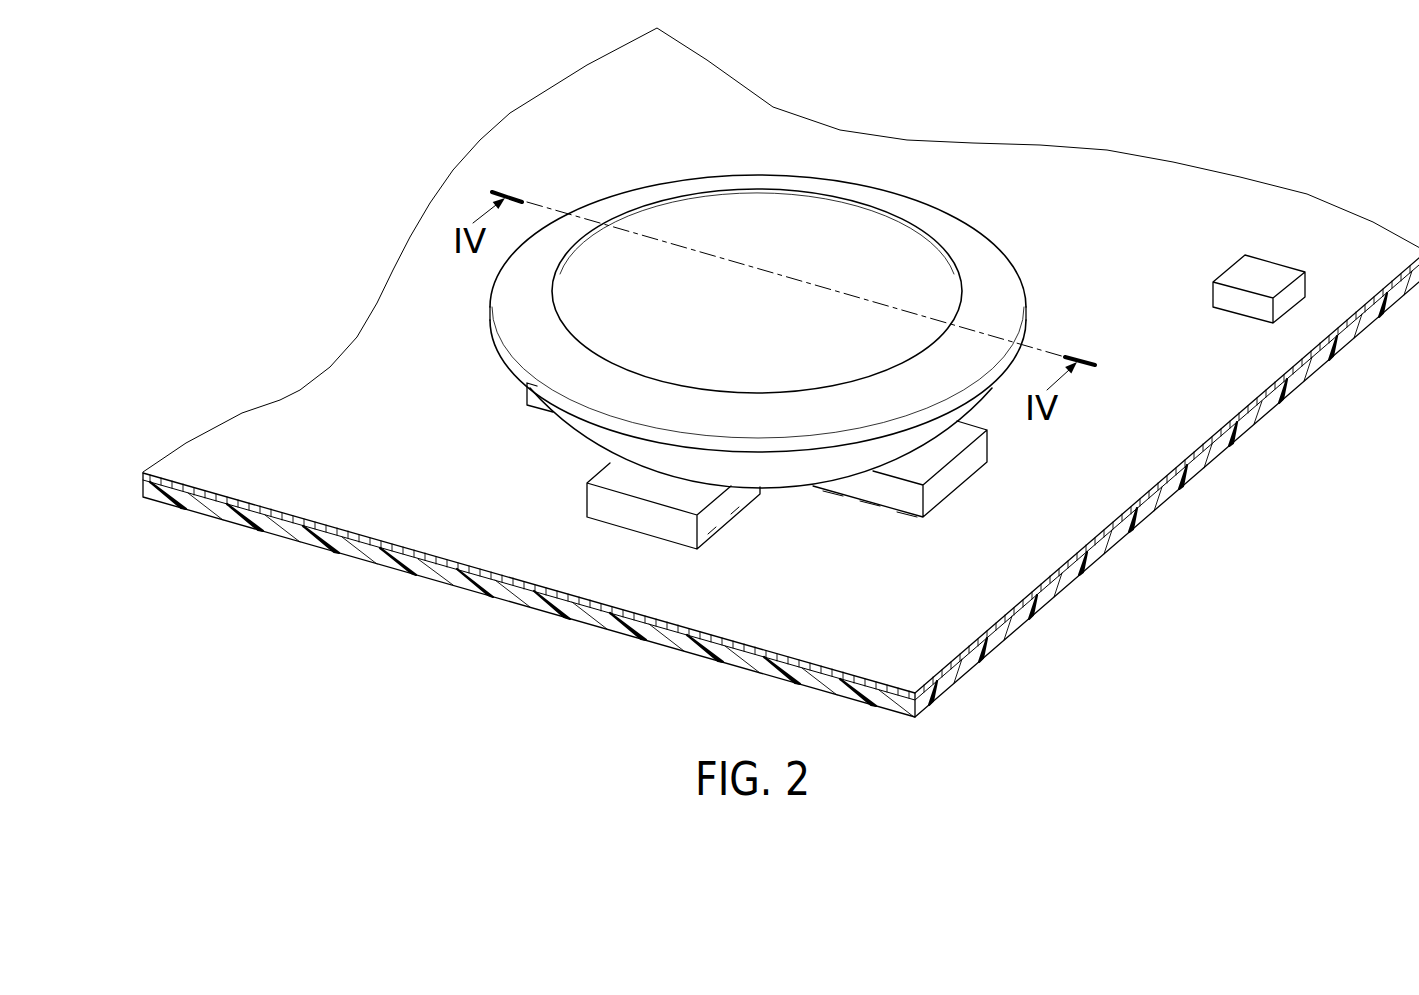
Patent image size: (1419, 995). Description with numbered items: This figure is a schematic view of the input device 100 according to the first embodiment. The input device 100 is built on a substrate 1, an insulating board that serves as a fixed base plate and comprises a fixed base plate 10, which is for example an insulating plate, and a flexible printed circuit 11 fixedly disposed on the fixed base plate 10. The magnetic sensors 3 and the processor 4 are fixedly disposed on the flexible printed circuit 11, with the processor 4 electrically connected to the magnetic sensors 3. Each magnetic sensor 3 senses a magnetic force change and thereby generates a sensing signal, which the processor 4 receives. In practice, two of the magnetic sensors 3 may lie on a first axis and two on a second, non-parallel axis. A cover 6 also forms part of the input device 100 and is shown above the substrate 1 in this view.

The input device 100 is at (1158, 110).
The substrate 1 is at (746, 487).
The fixed base plate 10 is at (103, 415).
The flexible printed circuit 11 is at (208, 468).
The magnetic sensor 3 is at (577, 496).
The processor 4 is at (1231, 270).
The cover 6 is at (996, 252).